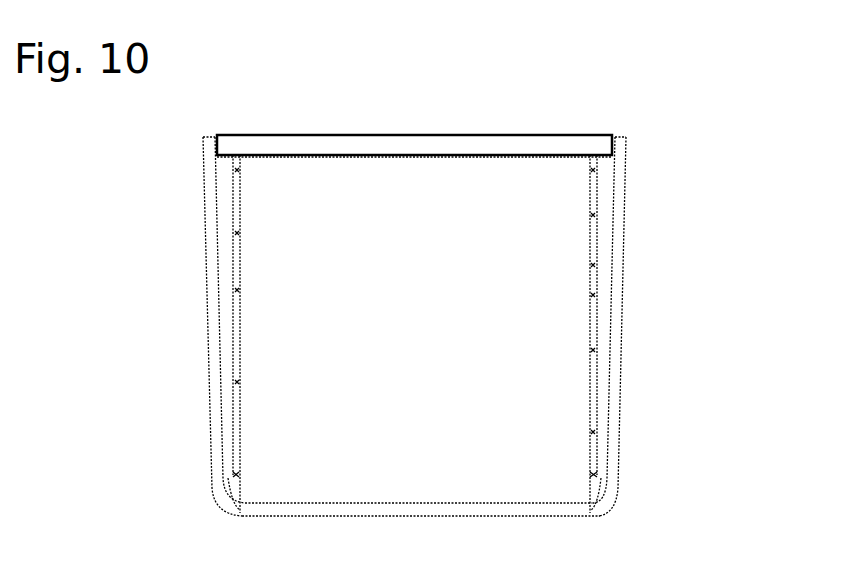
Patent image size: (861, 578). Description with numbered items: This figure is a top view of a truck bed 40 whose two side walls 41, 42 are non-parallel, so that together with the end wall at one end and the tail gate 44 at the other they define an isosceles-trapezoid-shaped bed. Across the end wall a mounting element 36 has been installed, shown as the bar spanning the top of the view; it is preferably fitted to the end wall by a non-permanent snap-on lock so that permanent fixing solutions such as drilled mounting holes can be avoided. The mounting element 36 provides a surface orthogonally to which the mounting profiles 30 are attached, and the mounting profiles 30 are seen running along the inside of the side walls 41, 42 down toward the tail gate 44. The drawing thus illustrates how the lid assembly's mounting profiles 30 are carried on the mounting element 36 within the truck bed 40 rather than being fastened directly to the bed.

The mounting element 36 is at (232, 143).
The side wall 42 is at (620, 228).
The mounting profile 30 is at (592, 278).
The truck bed 40 is at (322, 325).
The side wall 41 is at (215, 415).
The tail gate 44 is at (513, 513).